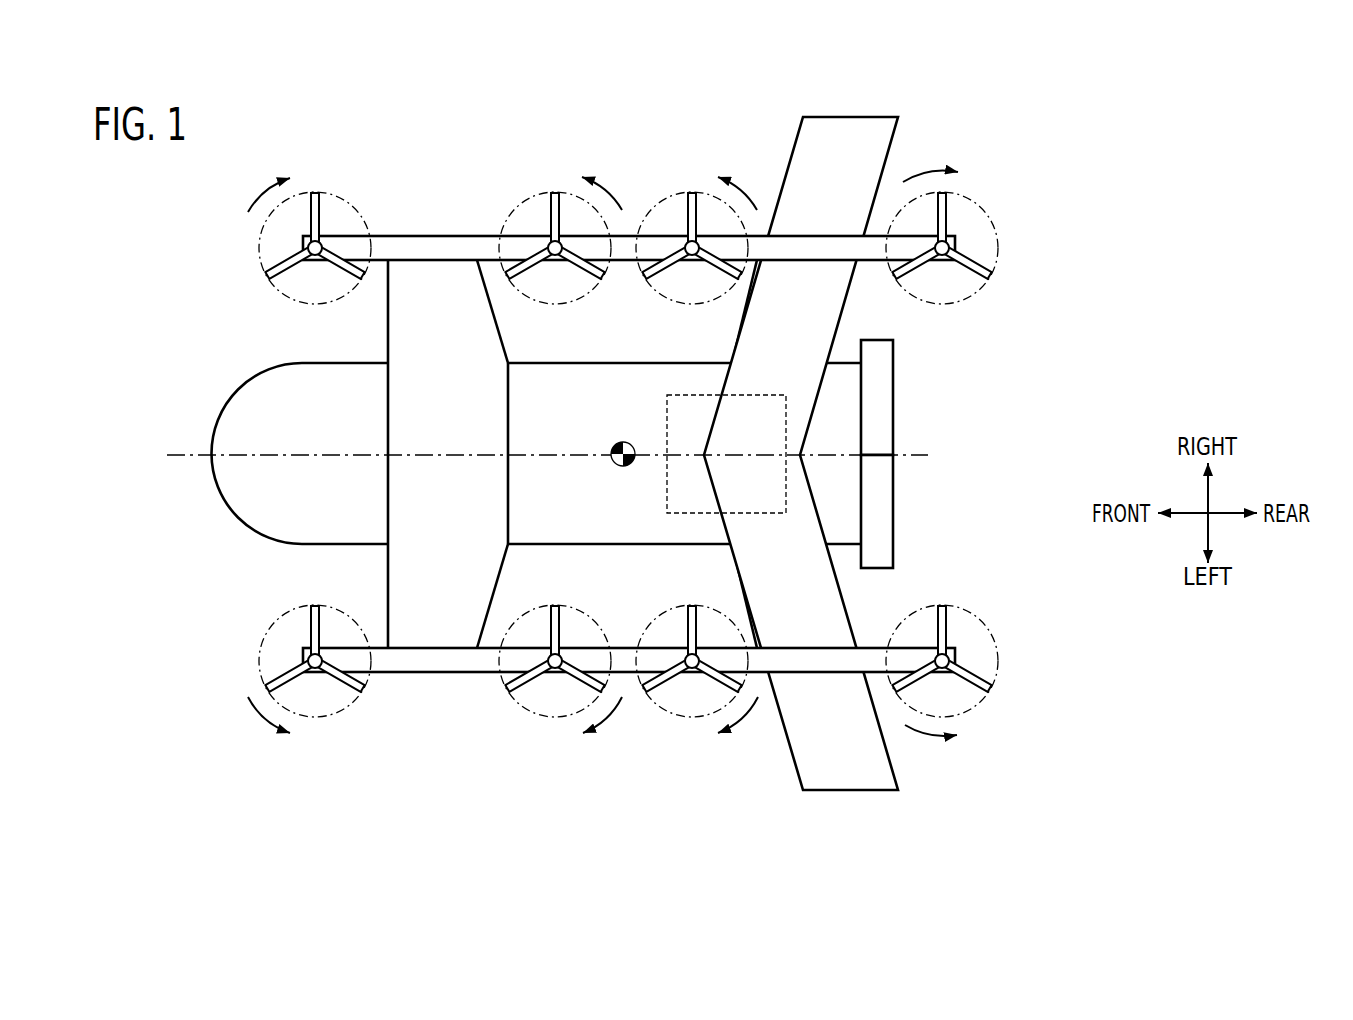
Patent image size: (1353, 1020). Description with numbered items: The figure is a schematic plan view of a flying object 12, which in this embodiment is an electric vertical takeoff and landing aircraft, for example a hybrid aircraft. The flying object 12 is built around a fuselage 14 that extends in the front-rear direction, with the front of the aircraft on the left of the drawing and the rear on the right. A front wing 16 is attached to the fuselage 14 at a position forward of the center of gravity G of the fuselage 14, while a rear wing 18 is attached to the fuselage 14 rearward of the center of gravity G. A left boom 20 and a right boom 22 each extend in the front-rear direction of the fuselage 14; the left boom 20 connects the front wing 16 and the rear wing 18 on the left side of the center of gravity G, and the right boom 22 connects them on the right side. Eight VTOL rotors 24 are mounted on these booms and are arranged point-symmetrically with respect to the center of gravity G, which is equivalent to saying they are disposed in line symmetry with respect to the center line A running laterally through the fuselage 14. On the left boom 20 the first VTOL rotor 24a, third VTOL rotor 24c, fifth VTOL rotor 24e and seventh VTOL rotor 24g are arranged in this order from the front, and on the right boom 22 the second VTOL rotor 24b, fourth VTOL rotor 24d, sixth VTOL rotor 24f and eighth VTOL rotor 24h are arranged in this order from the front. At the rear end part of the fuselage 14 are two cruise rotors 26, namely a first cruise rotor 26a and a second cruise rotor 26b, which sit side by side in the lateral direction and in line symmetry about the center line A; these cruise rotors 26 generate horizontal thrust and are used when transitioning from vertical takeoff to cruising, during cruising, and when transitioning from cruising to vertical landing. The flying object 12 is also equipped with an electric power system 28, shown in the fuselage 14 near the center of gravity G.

The flying object 12 is at (133, 211).
The fuselage 14 is at (228, 400).
The front wing 16 is at (421, 282).
The rear wing 18 is at (843, 117).
The left boom 20 is at (803, 673).
The right boom 22 is at (800, 236).
The VTOL rotors 24 is at (677, 454).
The first VTOL rotor 24a is at (342, 683).
The second VTOL rotor 24b is at (315, 192).
The third VTOL rotor 24c is at (503, 687).
The fourth VTOL rotor 24d is at (555, 192).
The fifth VTOL rotor 24e is at (662, 685).
The sixth VTOL rotor 24f is at (691, 192).
The seventh VTOL rotor 24g is at (990, 683).
The eighth VTOL rotor 24h is at (948, 205).
The cruise rotors 26 is at (940, 454).
The first cruise rotor 26a is at (893, 506).
The second cruise rotor 26b is at (893, 402).
The electric power system 28 is at (667, 412).
The center line A is at (539, 454).
The center of gravity G is at (614, 461).